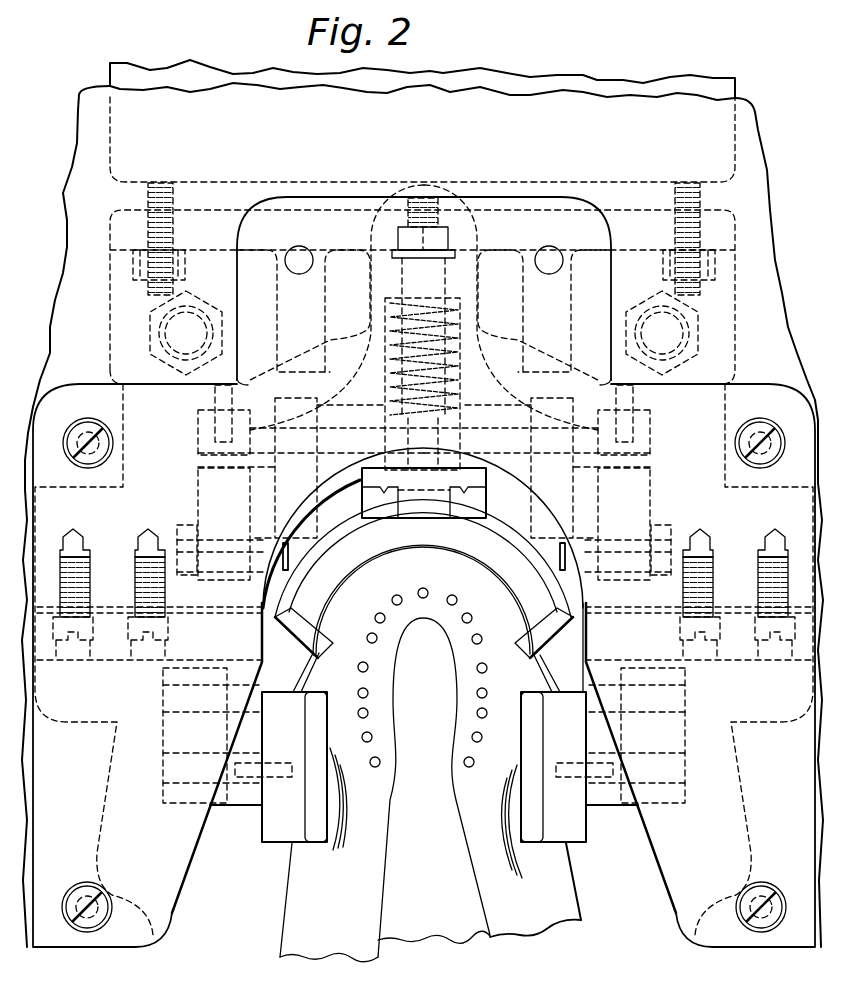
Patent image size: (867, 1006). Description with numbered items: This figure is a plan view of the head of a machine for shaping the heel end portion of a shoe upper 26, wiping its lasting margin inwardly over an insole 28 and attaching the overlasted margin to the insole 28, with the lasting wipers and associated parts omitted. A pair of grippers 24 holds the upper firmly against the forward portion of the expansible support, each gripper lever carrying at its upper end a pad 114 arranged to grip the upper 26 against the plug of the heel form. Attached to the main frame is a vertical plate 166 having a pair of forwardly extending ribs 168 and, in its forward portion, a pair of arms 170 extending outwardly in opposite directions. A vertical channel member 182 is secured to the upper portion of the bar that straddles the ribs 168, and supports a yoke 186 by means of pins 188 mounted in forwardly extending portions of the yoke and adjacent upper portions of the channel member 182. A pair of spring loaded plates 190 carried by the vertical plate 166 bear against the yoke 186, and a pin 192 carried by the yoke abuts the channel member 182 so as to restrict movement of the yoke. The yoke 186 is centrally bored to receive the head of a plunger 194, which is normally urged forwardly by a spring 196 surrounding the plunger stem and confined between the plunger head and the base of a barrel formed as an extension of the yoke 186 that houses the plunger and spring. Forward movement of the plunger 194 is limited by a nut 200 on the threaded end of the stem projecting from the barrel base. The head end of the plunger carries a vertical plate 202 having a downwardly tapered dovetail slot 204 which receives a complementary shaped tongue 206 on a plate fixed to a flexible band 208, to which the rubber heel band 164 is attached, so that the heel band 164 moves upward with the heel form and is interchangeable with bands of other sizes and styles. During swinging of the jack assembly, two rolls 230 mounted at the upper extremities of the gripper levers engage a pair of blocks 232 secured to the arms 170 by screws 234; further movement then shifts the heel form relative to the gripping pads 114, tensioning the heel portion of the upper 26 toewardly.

The grippers 24 is at (249, 865).
The shoe upper 26 is at (543, 930).
The insole 28 is at (435, 937).
The pad 114 is at (320, 717).
The heel band 164 is at (525, 607).
The vertical plate 166 is at (613, 212).
The ribs 168 is at (273, 293).
The arms 170 is at (82, 487).
The channel member 182 is at (198, 480).
The yoke 186 is at (480, 267).
The pins 188 is at (193, 547).
The spring loaded plates 190 is at (198, 437).
The pin 192 is at (213, 398).
The plunger 194 is at (402, 268).
The spring 196 is at (448, 313).
The nut 200 is at (397, 240).
The vertical plate 202 is at (365, 478).
The dovetail slot 204 is at (390, 490).
The tongue 206 is at (458, 505).
The flexible band 208 is at (290, 595).
The rolls 230 is at (237, 728).
The blocks 232 is at (183, 658).
The screws 234 is at (137, 658).